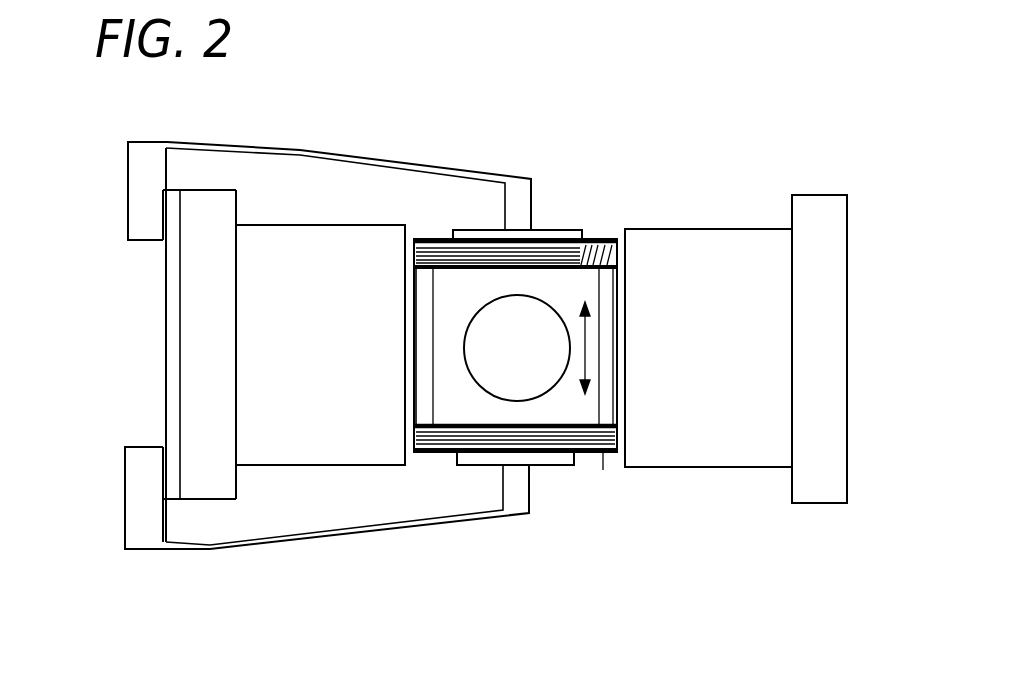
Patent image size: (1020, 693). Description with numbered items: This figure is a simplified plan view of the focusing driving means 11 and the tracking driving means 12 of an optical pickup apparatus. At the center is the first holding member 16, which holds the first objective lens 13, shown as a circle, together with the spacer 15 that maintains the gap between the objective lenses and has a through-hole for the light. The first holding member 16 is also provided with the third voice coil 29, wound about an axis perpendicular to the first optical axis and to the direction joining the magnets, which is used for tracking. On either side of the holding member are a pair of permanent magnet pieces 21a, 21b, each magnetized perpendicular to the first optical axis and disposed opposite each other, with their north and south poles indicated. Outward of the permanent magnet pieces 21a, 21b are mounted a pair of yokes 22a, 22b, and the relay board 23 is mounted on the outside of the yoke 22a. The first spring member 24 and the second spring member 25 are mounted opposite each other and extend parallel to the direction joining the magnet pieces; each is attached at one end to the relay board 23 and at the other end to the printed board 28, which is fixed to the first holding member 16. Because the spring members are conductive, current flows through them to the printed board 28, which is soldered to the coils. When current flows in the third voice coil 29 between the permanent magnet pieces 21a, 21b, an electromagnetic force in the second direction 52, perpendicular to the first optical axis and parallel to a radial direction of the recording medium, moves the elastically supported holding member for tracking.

The focusing driving means 11 is at (743, 113).
The tracking driving means 12 is at (810, 113).
The first objective lens 13 is at (500, 325).
The spacer 15 is at (582, 277).
The first holding member 16 is at (605, 277).
The permanent magnet piece 21a is at (330, 250).
The permanent magnet piece 21b is at (708, 250).
The yoke 22a is at (198, 385).
The yoke 22b is at (833, 392).
The relay board 23 is at (170, 280).
The first spring member 24 is at (331, 534).
The second spring member 25 is at (360, 149).
The printed board 28 is at (553, 231).
The third voice coil 29 is at (600, 455).
The second direction (arrow) 52 is at (585, 355).